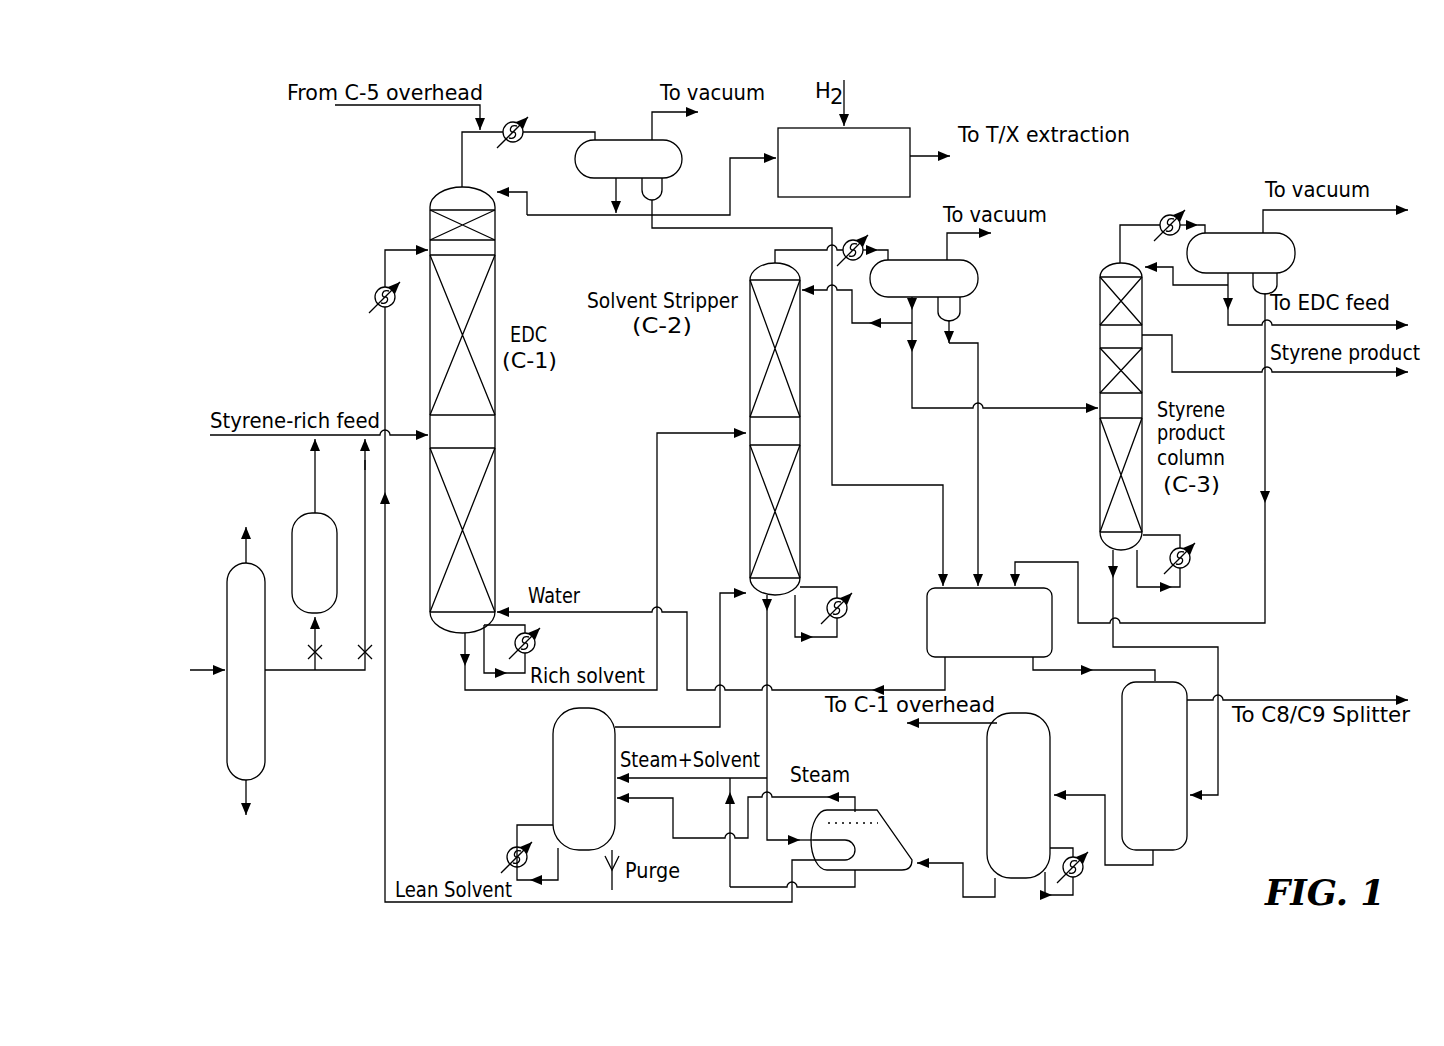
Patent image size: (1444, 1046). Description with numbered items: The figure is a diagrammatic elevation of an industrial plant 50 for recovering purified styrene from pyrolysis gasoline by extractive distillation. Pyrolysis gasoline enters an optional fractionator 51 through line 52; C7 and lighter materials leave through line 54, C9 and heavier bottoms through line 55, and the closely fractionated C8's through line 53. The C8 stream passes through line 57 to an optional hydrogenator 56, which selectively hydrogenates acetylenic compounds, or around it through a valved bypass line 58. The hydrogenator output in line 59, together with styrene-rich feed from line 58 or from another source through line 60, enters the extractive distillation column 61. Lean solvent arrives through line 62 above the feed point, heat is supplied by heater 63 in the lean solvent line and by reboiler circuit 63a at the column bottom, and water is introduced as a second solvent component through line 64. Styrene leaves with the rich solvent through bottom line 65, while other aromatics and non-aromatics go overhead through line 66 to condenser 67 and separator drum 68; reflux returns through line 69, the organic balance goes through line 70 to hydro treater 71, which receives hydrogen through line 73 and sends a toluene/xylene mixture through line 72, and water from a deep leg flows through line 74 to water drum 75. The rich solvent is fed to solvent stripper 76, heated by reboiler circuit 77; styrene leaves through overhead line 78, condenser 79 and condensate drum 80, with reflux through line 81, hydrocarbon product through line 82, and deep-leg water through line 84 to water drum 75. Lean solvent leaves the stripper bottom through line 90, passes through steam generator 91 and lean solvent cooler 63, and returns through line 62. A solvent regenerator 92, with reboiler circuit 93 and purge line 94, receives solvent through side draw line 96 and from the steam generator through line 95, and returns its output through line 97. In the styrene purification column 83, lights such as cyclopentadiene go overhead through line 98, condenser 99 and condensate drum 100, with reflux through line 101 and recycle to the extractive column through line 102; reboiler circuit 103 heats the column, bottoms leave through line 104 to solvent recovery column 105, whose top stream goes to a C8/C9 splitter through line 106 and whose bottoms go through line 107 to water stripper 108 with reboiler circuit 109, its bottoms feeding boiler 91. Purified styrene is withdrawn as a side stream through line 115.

The plant 50 is at (298, 177).
The fractionator 51 is at (226, 615).
The line 52 is at (198, 675).
The line 53 is at (280, 673).
The line 54 is at (242, 553).
The line 55 is at (262, 792).
The hydrogenator 56 is at (297, 517).
The line 57 is at (310, 648).
The bypass line 58 is at (365, 470).
The line 59 is at (313, 462).
The line 60 is at (245, 440).
The extractive distillation column 61 is at (497, 287).
The line 62 is at (385, 345).
The heater 63 is at (375, 292).
The reboiler circuit 63a is at (540, 648).
The line 64 is at (588, 602).
The bottom line 65 is at (462, 645).
The line 66 is at (462, 148).
The condenser 67 is at (522, 142).
The separator drum 68 is at (628, 138).
The line 69 is at (582, 212).
The line 70 is at (718, 212).
The hydro treater 71 is at (912, 167).
The line 72 is at (925, 150).
The line 73 is at (850, 100).
The line 74 is at (668, 230).
The water drum 75 is at (925, 640).
The solvent stripper 76 is at (748, 360).
The reboiler circuit 77 is at (850, 622).
The overhead line 78 is at (768, 252).
The condenser 79 is at (848, 240).
The condensate drum 80 is at (938, 258).
The line 81 is at (887, 326).
The line 82 is at (945, 405).
The styrene purification column 83 is at (1098, 462).
The line 84 is at (978, 348).
The line 90 is at (772, 638).
The steam generator 91 is at (893, 825).
The solvent regenerator 92 is at (552, 792).
The reboiler circuit 93 is at (515, 828).
The purge line 94 is at (617, 845).
The line 95 is at (703, 845).
The side draw line 96 is at (698, 783).
The line 97 is at (717, 605).
The line 98 is at (1133, 222).
The condenser 99 is at (1163, 216).
The condensate drum 100 is at (1256, 235).
The line 101 is at (1215, 287).
The line 102 is at (1257, 327).
The reboiler circuit 103 is at (1190, 570).
The line 104 is at (1110, 568).
The solvent recovery column 105 is at (1120, 740).
The line 106 is at (1278, 700).
The line 107 is at (1160, 870).
The water stripper 108 is at (987, 790).
The reboiler circuit 109 is at (1085, 880).
The line 115 is at (1355, 378).